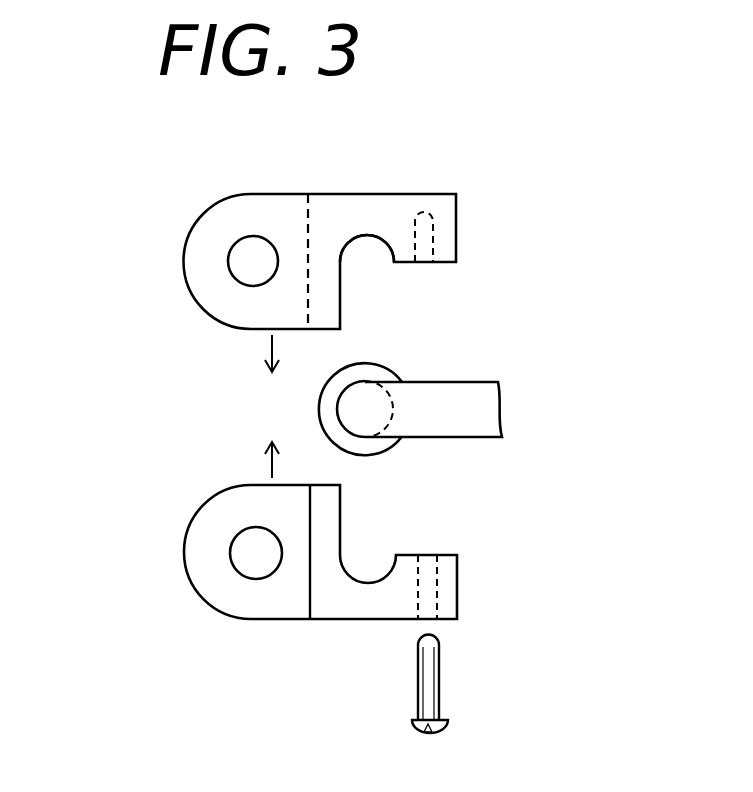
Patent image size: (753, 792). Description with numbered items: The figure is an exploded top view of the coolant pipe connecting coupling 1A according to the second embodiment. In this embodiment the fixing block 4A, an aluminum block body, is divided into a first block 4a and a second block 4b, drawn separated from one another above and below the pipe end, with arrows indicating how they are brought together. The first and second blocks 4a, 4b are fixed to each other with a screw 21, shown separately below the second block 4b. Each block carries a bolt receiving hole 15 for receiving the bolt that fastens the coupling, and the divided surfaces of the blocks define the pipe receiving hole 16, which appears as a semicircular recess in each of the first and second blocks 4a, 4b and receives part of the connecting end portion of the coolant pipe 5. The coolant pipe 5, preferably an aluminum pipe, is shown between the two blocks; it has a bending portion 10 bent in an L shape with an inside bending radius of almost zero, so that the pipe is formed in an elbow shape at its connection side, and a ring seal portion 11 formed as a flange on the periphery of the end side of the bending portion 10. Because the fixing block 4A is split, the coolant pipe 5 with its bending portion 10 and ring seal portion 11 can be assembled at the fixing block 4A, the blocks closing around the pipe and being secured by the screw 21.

The coolant pipe connecting coupling 1A is at (151, 642).
The fixing block 4A is at (204, 650).
The first block 4a is at (248, 193).
The second block 4b is at (266, 619).
The coolant pipe 5 is at (463, 394).
The bending portion 10 is at (357, 418).
The ring seal portion 11 is at (377, 362).
The bolt receiving hole 15 is at (232, 256).
The pipe receiving hole 16 is at (372, 238).
The screw 21 is at (440, 670).